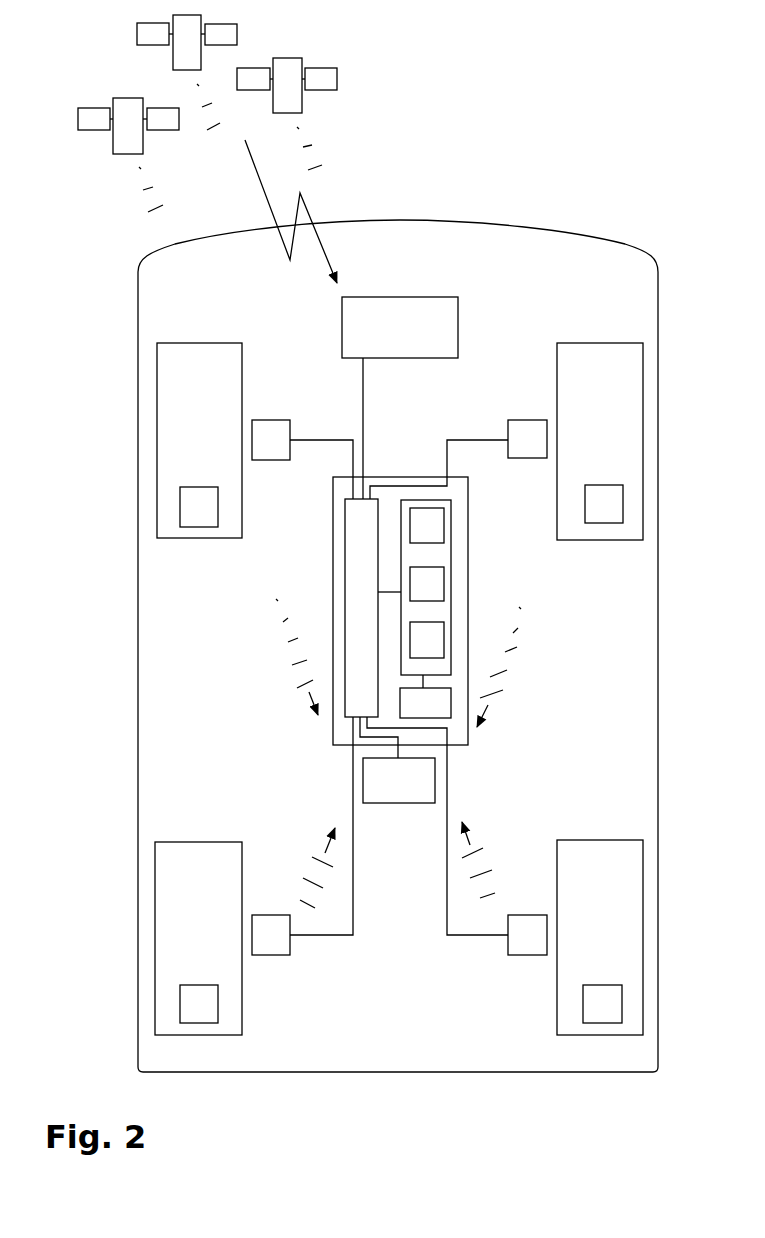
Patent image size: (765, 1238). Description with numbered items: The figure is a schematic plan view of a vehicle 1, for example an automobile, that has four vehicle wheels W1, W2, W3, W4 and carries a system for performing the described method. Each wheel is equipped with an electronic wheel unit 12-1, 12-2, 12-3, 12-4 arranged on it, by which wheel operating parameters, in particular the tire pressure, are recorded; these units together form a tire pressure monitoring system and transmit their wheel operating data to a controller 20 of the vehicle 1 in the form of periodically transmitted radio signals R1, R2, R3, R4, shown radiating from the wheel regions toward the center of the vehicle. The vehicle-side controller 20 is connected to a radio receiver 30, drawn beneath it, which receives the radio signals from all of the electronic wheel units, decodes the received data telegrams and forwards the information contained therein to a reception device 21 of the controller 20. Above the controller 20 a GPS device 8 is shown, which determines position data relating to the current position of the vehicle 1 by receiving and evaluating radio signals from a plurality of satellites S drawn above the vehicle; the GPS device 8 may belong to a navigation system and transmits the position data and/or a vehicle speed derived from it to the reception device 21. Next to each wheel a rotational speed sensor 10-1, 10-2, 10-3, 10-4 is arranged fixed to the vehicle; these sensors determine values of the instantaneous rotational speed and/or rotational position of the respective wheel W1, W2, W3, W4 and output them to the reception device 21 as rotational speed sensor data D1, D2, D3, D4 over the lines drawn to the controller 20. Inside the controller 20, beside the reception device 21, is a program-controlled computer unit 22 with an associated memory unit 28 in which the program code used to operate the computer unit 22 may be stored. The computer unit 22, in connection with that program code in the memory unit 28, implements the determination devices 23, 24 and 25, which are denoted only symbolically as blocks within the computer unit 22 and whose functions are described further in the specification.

The satellites S is at (100, 62).
The vehicle 1 is at (100, 273).
The GPS device 8 is at (407, 338).
The vehicle wheel W1 is at (175, 415).
The vehicle wheel W2 is at (622, 418).
The vehicle wheel W3 is at (180, 903).
The vehicle wheel W4 is at (627, 902).
The rotational speed sensor 10-1 is at (272, 435).
The rotational speed sensor 10-2 is at (527, 430).
The rotational speed sensor 10-3 is at (272, 942).
The rotational speed sensor 10-4 is at (527, 943).
The electronic wheel unit 12-1 is at (188, 498).
The electronic wheel unit 12-2 is at (615, 498).
The electronic wheel unit 12-3 is at (190, 1000).
The electronic wheel unit 12-4 is at (610, 1002).
The rotational speed sensor data D1 is at (321, 457).
The rotational speed sensor data D2 is at (439, 458).
The rotational speed sensor data D3 is at (339, 826).
The rotational speed sensor data D4 is at (437, 826).
The controller 20 is at (460, 555).
The reception device 21 is at (373, 602).
The computer unit 22 is at (438, 615).
The determination device 23 is at (440, 536).
The determination device 24 is at (440, 595).
The determination device 25 is at (440, 651).
The memory unit 28 is at (439, 715).
The radio receiver 30 is at (412, 791).
The radio signal R1 is at (295, 661).
The radio signal R2 is at (500, 670).
The radio signal R3 is at (309, 867).
The radio signal R4 is at (483, 858).